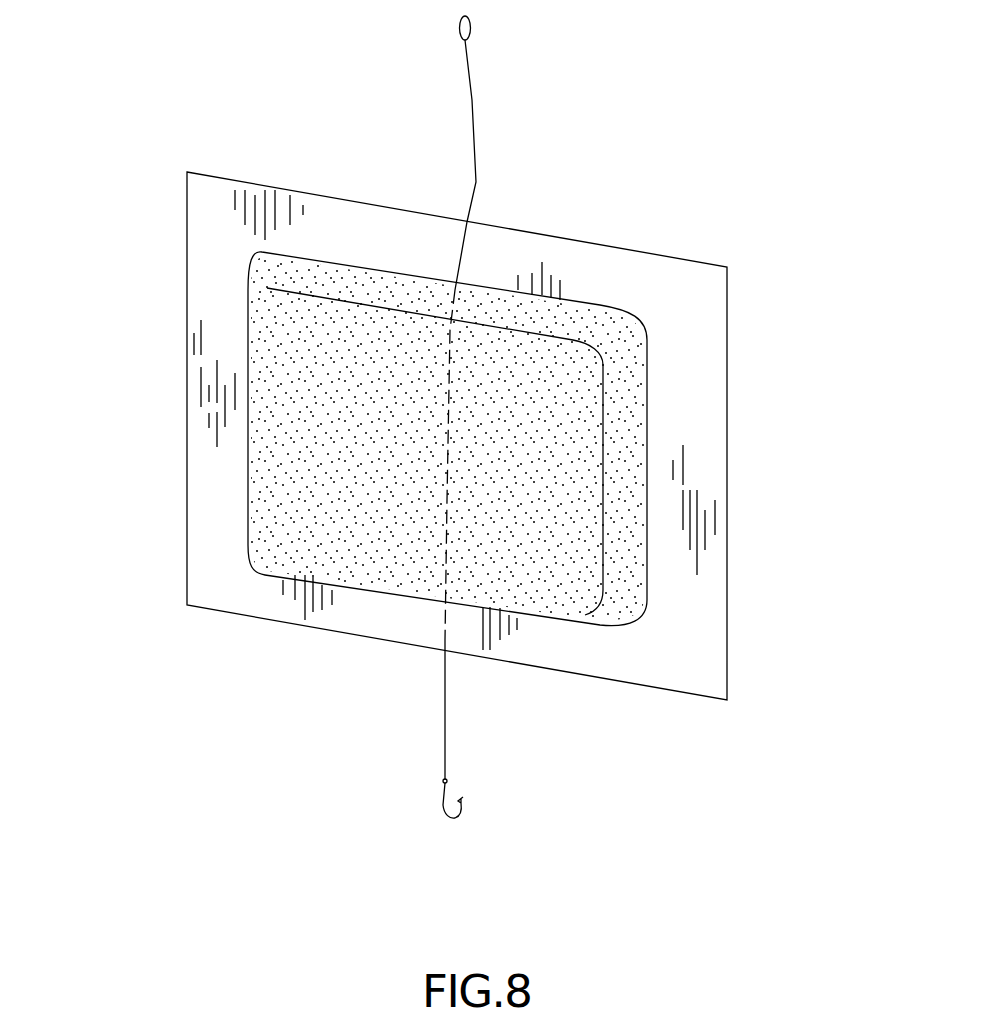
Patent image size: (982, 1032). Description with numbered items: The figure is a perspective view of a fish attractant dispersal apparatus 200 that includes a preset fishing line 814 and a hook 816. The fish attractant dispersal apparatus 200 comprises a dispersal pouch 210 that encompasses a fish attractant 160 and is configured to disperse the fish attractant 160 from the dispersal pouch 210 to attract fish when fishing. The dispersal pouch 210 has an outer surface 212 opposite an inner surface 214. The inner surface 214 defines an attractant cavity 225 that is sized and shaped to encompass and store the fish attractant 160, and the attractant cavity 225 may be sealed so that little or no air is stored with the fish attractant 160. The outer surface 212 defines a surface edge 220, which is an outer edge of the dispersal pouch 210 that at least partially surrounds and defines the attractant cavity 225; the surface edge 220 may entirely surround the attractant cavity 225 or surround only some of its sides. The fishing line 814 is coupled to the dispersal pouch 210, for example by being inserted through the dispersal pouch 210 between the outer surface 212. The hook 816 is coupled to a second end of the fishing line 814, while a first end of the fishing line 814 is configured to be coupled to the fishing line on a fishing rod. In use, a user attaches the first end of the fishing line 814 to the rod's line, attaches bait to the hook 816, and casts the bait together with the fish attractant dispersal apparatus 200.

The fish attractant dispersal apparatus 200 is at (435, 442).
The dispersal pouch 210 is at (153, 296).
The outer surface 212 is at (230, 587).
The inner surface 214 is at (325, 567).
The surface edge 220 is at (698, 281).
The attractant cavity 225 is at (396, 556).
The fish attractant 160 is at (590, 435).
The preset fishing line 814 is at (516, 131).
The hook 816 is at (482, 822).